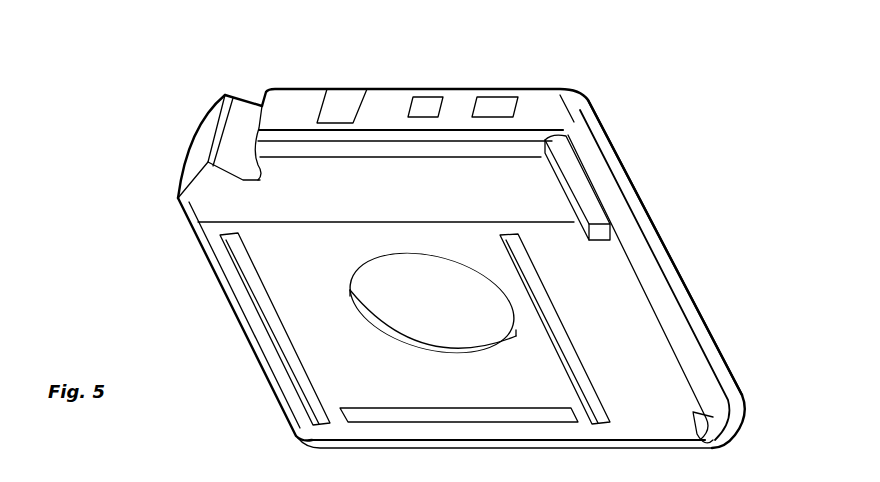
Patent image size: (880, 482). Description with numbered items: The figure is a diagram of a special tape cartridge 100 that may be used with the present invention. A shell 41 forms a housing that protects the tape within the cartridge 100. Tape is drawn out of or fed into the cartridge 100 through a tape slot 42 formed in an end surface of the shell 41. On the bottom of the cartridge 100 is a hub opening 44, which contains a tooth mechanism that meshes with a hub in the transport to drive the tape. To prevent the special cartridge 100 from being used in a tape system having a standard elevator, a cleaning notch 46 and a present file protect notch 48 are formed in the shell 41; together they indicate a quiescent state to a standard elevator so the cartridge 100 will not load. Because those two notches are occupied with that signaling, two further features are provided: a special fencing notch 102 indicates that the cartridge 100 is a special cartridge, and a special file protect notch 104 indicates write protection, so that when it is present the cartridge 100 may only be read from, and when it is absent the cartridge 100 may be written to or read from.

The tape cartridge 100 is at (618, 82).
The shell 41 is at (677, 297).
The tape slot 42 is at (258, 85).
The hub opening 44 is at (330, 312).
The cleaning notch 46 is at (583, 183).
The present file protect notch 48 is at (503, 103).
The special fencing notch 102 is at (353, 85).
The special file protect notch 104 is at (430, 103).